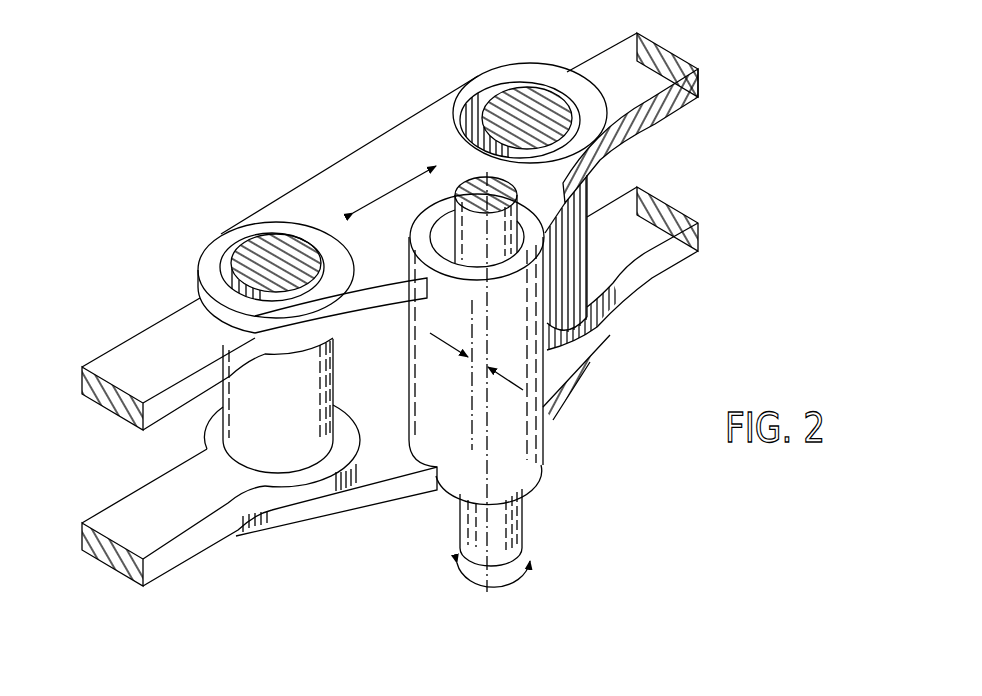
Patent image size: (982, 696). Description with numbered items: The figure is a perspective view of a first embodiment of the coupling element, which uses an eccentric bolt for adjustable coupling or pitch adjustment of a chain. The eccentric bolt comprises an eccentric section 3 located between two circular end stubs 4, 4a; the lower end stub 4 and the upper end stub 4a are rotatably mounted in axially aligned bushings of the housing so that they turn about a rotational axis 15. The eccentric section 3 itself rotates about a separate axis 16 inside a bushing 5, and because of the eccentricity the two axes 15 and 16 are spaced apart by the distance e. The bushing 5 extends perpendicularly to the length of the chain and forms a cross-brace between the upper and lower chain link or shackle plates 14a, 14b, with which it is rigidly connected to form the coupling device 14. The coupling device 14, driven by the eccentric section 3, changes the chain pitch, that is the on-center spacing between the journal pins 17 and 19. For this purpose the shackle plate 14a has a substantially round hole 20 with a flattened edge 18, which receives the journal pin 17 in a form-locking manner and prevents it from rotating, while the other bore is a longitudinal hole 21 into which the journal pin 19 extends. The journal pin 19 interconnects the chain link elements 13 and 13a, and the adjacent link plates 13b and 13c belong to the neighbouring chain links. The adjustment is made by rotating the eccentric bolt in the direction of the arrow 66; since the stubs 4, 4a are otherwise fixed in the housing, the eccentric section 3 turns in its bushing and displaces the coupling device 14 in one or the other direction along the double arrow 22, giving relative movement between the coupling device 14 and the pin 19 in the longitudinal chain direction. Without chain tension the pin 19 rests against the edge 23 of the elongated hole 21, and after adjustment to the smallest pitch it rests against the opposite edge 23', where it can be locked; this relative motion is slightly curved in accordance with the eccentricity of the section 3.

The eccentric section 3 is at (443, 238).
The circular end stub 4 is at (497, 530).
The upper circular end stub 4a is at (480, 222).
The bushing 5 is at (512, 445).
The chain link element 13 is at (650, 272).
The chain link element 13a is at (652, 115).
The link plate 13b is at (170, 557).
The link plate 13c is at (162, 330).
The coupling device 14 is at (550, 491).
The shackle plate 14a is at (343, 173).
The shackle plate 14b is at (368, 475).
The rotational axis 15 is at (533, 483).
The axis 16 is at (470, 417).
The journal pin 17 is at (253, 253).
The flattened edge 18 is at (302, 243).
The journal pin 19 is at (503, 103).
The round hole 20 is at (221, 243).
The longitudinal hole 21 is at (467, 123).
The arrow 22 is at (390, 173).
The edge 23 is at (527, 79).
The opposite edge 23' is at (428, 132).
The arrow 66 is at (523, 577).
The distance e is at (476, 362).